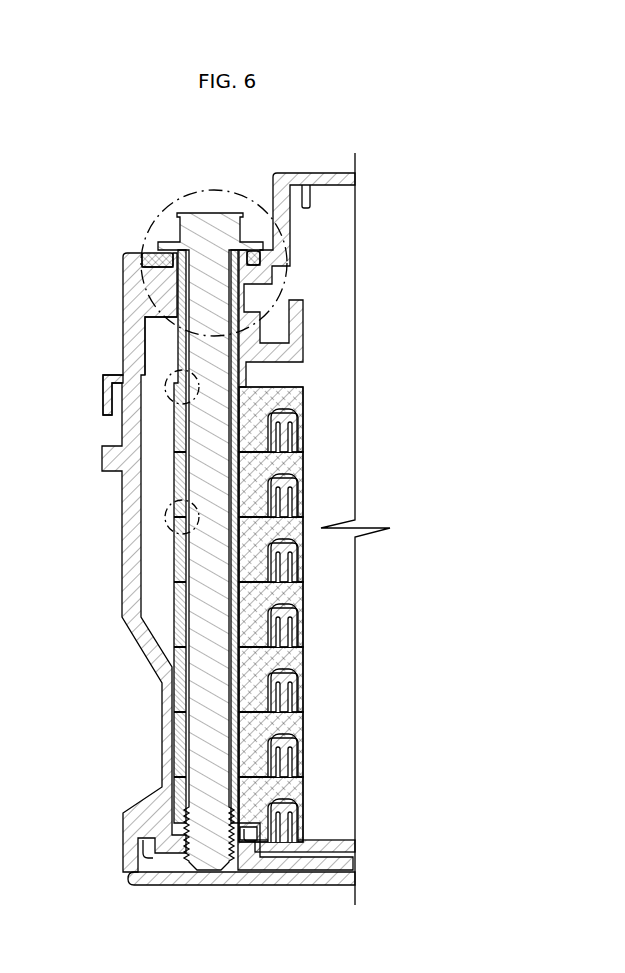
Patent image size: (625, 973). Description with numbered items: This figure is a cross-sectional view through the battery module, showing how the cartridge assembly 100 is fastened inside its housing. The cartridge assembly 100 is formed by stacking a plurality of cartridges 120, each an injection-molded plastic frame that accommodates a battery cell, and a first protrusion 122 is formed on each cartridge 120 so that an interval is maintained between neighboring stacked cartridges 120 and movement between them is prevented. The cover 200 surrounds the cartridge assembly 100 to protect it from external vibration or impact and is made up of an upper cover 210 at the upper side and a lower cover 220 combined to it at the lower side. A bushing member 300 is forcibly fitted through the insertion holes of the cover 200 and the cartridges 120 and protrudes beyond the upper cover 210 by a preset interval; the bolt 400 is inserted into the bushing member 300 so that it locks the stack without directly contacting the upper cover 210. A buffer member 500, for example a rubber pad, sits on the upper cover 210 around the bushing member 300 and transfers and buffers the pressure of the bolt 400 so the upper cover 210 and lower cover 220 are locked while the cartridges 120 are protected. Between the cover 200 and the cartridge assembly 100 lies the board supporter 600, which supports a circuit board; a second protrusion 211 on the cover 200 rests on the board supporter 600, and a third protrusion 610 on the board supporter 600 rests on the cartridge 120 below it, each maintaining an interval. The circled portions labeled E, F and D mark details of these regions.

The cartridge assembly 100 is at (322, 615).
The cartridge 120 is at (292, 403).
The first protrusion 122 is at (240, 452).
The cover 200 is at (210, 554).
The upper cover 210 is at (133, 281).
The second protrusion 211 is at (175, 327).
The lower cover 220 is at (147, 884).
The bushing member 300 is at (183, 493).
The bolt 400 is at (243, 181).
The buffer member 500 is at (155, 258).
The board supporter 600 is at (177, 341).
The third protrusion 610 is at (176, 385).
The detail region E is at (211, 190).
The detail region F is at (167, 377).
The detail region D is at (170, 517).